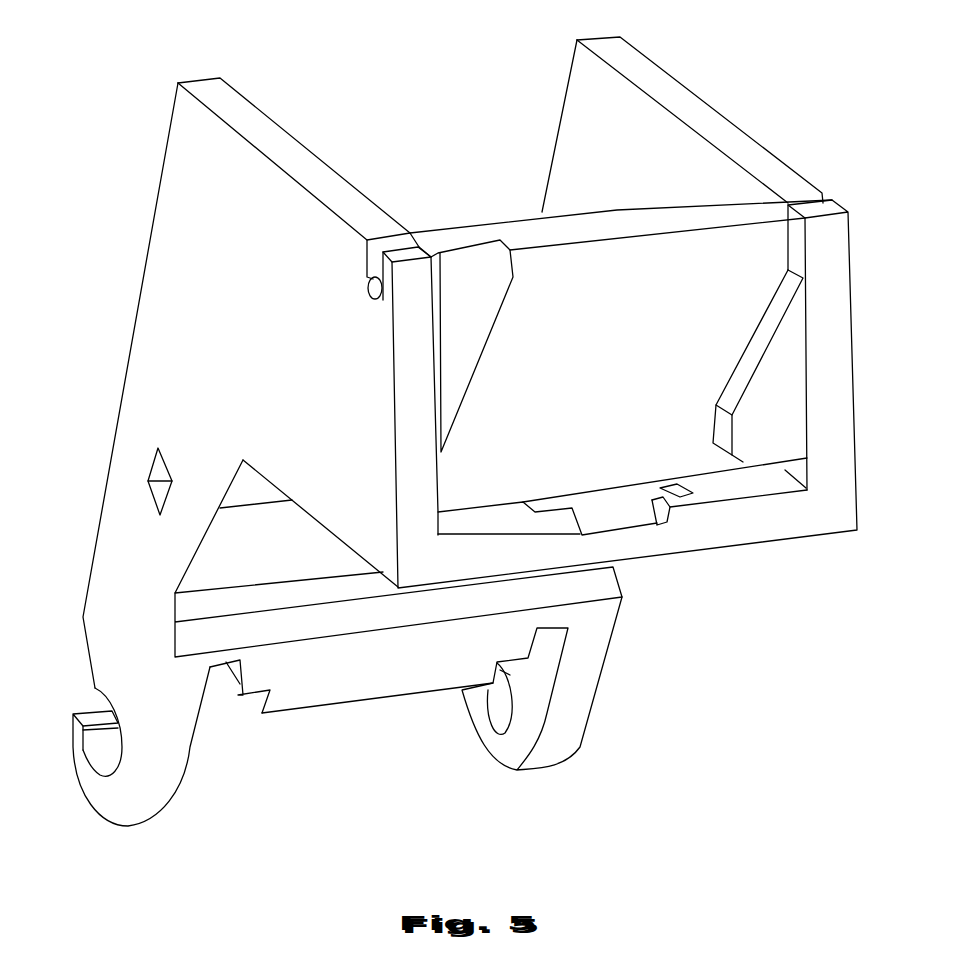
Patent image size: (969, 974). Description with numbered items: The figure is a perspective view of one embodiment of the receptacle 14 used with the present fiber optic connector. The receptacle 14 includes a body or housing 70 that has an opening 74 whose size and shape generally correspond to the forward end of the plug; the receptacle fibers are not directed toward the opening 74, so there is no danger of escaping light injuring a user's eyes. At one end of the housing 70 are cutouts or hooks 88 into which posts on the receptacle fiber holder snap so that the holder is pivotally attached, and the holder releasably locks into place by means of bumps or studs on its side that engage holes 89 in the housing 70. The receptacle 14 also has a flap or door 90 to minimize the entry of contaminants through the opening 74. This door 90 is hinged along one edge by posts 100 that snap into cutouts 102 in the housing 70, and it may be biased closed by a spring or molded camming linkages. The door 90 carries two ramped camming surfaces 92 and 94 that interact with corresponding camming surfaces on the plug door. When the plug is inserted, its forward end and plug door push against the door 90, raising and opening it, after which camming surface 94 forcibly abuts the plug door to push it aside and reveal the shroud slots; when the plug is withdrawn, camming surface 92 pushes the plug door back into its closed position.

The receptacle 14 is at (100, 157).
The housing 70 is at (228, 367).
The opening 74 is at (793, 477).
The hooks 88 is at (103, 757).
The holes 89 is at (158, 505).
The receptacle door 90 is at (650, 312).
The camming surface 92 is at (482, 368).
The camming surface 94 is at (748, 355).
The posts 100 is at (372, 294).
The cutouts 102 is at (370, 258).